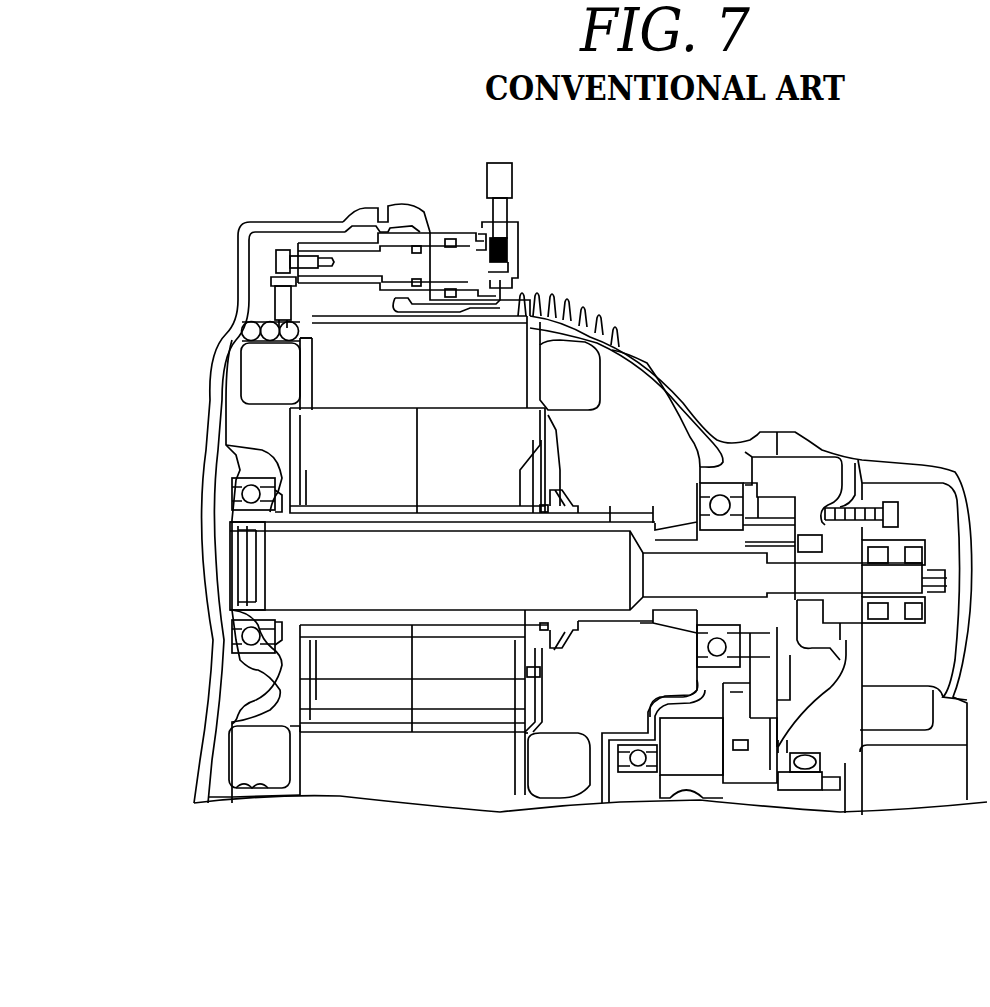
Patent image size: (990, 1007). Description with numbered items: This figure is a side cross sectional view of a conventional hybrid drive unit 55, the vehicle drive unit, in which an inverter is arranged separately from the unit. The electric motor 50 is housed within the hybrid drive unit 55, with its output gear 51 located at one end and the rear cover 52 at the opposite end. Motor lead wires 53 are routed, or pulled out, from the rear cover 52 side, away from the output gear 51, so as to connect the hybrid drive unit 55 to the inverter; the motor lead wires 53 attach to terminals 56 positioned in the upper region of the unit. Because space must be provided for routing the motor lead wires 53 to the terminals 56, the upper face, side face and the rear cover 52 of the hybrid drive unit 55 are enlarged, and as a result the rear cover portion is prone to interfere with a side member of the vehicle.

The electric motor 50 is at (274, 438).
The output gear 51 is at (811, 693).
The rear cover 52 is at (208, 360).
The motor lead wires 53 is at (270, 312).
The hybrid drive unit 55 is at (719, 304).
The terminals 56 is at (388, 245).